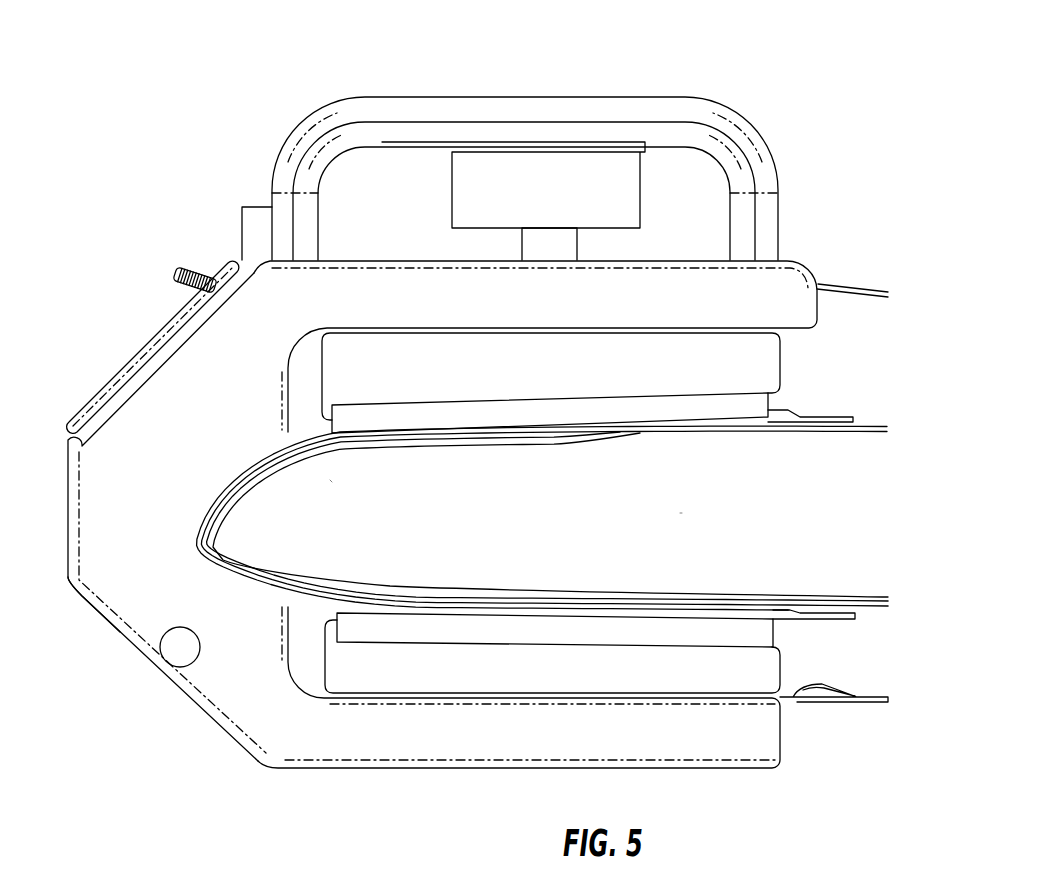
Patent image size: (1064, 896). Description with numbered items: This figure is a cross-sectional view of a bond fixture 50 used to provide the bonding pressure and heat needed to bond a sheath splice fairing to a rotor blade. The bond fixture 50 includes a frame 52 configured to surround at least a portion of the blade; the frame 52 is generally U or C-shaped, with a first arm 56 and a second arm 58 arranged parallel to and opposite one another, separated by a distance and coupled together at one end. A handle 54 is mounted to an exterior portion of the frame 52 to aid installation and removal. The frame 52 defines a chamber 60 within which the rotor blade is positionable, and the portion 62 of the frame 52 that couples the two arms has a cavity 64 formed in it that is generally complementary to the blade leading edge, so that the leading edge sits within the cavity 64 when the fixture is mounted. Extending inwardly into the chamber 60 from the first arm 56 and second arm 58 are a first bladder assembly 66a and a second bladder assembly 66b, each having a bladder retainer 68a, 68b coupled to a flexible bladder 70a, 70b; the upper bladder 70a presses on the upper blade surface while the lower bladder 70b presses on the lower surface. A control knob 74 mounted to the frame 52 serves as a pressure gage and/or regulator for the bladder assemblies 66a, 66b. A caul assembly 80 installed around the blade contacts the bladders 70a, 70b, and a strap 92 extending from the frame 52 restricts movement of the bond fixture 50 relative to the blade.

The bond fixture 50 is at (862, 50).
The frame 52 is at (57, 543).
The handle 54 is at (345, 130).
The first arm 56 is at (404, 283).
The second arm 58 is at (460, 750).
The chamber 60 is at (680, 513).
The portion of the frame 62 is at (97, 565).
The cavity 64 is at (240, 467).
The first bladder assembly 66a is at (636, 379).
The second bladder assembly 66b is at (638, 656).
The bladder retainer 68a is at (776, 360).
The bladder retainer 68b is at (845, 642).
The bladder 70a is at (592, 407).
The bladder 70b is at (767, 630).
The control knob 74 is at (600, 150).
The caul assembly 80 is at (330, 480).
The strap 92 is at (852, 287).